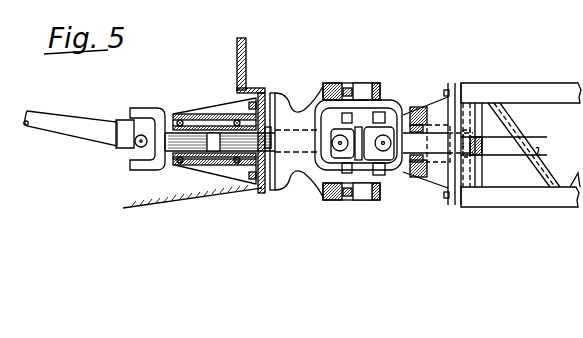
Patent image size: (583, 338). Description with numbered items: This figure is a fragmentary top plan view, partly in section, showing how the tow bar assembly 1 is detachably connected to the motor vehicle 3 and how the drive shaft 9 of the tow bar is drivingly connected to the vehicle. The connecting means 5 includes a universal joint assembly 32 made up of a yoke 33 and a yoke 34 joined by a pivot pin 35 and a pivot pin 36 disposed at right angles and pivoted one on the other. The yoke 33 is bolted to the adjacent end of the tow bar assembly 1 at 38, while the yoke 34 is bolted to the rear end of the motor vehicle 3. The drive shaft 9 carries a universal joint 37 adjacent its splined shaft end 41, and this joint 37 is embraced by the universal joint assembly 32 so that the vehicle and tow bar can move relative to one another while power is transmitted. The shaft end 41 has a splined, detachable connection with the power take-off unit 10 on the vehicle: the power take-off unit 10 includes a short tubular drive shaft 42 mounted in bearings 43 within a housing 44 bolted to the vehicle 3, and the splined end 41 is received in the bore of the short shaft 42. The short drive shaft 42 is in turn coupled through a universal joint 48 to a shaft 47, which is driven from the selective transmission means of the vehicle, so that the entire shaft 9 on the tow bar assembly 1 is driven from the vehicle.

The tow bar assembly 1 is at (516, 66).
The motor vehicle 3 is at (247, 63).
The means for detachably connecting 5 is at (383, 80).
The drive shaft 9 is at (537, 150).
The power take-off unit 10 is at (253, 87).
The universal joint assembly 32 is at (327, 199).
The yoke 33 is at (418, 110).
The yoke 34 is at (330, 85).
The pivot pin 35 is at (377, 178).
The pivot pin 36 is at (363, 85).
The universal joint 37 is at (342, 167).
The bolted connection 38 is at (447, 101).
The shaft end 41 is at (232, 145).
The short tubular drive shaft 42 is at (196, 148).
The bearings 43 is at (185, 115).
The housing 44 is at (205, 117).
The shaft 47 is at (83, 104).
The universal joint 48 is at (136, 144).